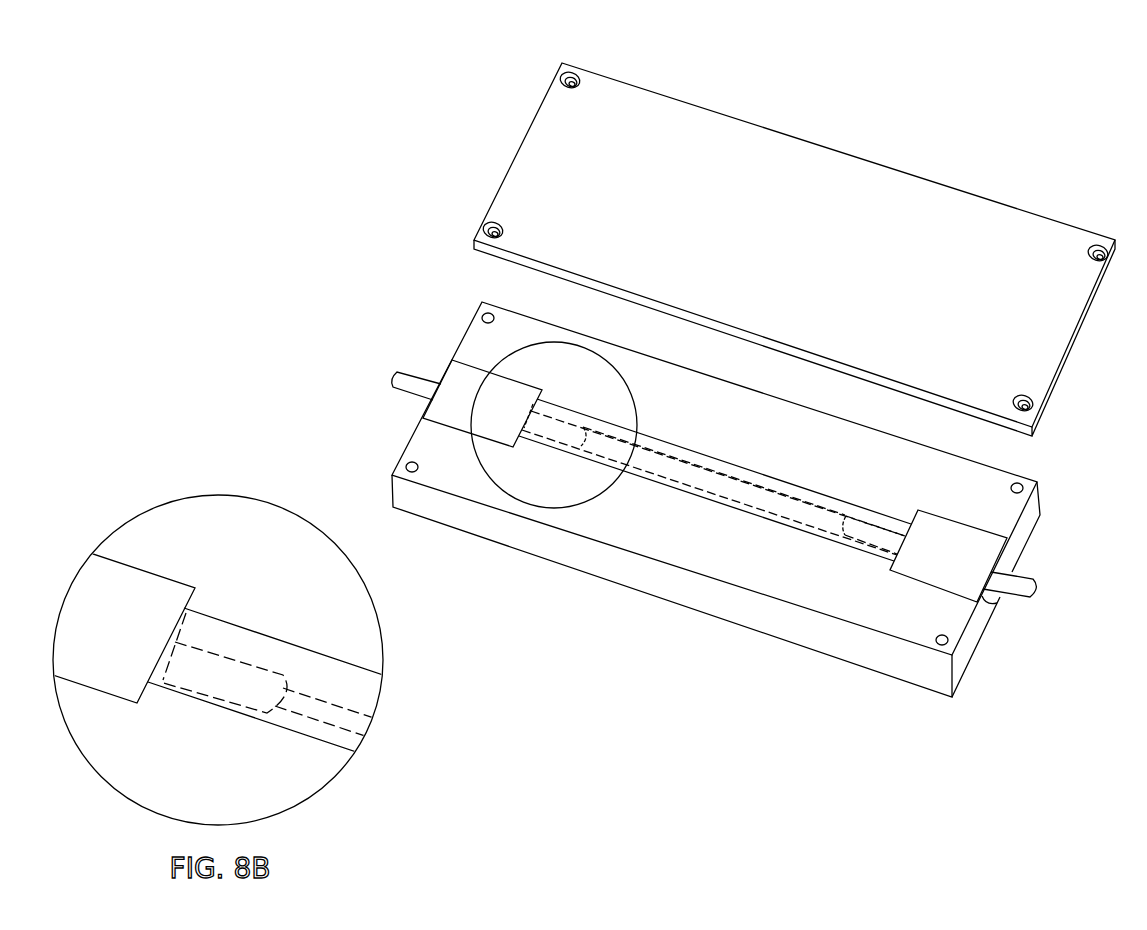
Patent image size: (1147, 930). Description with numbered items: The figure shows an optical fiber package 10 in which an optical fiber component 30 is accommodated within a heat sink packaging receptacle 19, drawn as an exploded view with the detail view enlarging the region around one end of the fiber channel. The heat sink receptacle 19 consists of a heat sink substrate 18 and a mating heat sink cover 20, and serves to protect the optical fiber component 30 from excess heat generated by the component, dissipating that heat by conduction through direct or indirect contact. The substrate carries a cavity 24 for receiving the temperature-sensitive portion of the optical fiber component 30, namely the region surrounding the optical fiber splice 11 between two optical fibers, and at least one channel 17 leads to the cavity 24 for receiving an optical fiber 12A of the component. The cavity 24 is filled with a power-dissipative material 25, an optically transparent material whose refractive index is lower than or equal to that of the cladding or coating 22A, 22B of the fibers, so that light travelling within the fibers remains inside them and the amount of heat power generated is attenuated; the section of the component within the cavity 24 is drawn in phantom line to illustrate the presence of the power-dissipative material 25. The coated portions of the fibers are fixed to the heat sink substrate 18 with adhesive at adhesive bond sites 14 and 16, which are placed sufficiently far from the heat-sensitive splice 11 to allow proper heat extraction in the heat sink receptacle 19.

In FIG. 8A, the package 10 is at (280, 214).
In FIG. 8A, the optical fiber splice 11 is at (708, 488).
In FIG. 8A, the optical fiber 12A is at (598, 448).
In FIG. 8B, the optical fiber 12A is at (322, 712).
In FIG. 8A, the adhesive bond site 14 is at (452, 388).
In FIG. 8B, the adhesive bond site 14 is at (97, 615).
In FIG. 8A, the adhesive bond site 16 is at (956, 549).
In FIG. 8A, the channel 17 is at (483, 367).
In FIG. 8A, the heat sink substrate 18 is at (418, 504).
In FIG. 8A, the heat sink packaging receptacle 19 is at (490, 180).
In FIG. 8A, the heat sink cover 20 is at (541, 185).
In FIG. 8A, the coating 22A is at (550, 428).
In FIG. 8B, the coating 22A is at (213, 672).
In FIG. 8A, the coating 22B is at (863, 537).
In FIG. 8A, the cavity 24 is at (788, 490).
In FIG. 8B, the cavity 24 is at (215, 635).
In FIG. 8A, the power-dissipative material 25 is at (712, 463).
In FIG. 8B, the power-dissipative material 25 is at (268, 652).
In FIG. 8A, the optical fiber component 30 is at (775, 512).